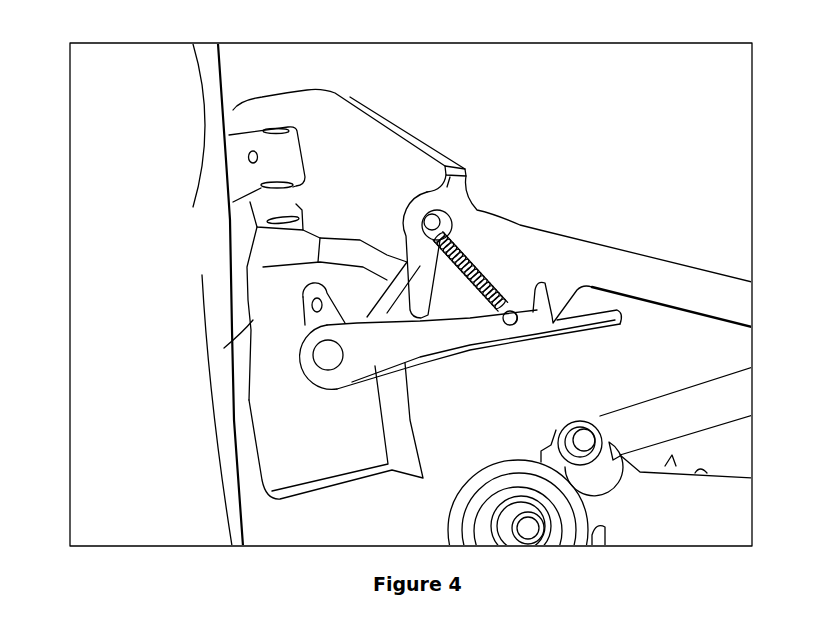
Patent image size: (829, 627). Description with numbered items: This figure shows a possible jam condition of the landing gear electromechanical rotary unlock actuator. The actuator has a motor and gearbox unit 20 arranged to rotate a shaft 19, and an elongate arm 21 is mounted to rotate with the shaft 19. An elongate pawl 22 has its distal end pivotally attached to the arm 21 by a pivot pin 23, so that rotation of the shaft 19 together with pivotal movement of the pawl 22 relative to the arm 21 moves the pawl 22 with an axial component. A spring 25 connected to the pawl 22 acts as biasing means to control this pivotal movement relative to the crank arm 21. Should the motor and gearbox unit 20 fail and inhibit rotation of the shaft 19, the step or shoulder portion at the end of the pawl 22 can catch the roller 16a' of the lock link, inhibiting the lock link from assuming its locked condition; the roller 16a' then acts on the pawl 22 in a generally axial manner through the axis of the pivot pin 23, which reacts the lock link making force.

The roller 16a' is at (592, 232).
The shaft 19 is at (312, 302).
The motor and gearbox unit 20 is at (287, 413).
The elongate arm 21 is at (312, 322).
The pawl 22 is at (468, 330).
The pivot pin 23 is at (328, 357).
The spring 25 is at (470, 272).